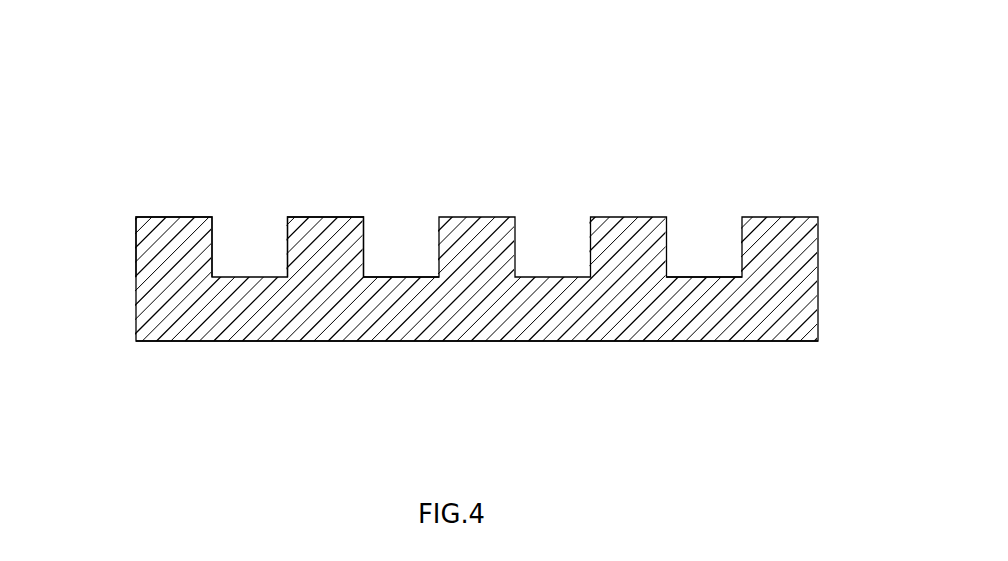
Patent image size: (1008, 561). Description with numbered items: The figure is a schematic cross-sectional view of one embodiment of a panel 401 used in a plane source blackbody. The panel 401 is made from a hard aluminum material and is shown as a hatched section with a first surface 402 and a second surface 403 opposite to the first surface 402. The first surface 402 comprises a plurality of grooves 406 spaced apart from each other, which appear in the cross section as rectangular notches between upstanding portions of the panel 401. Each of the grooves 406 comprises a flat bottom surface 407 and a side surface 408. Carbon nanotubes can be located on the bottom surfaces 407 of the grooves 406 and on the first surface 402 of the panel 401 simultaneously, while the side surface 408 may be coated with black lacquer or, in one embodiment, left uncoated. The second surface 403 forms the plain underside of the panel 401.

The panel 401 is at (468, 118).
The first surface 402 is at (173, 217).
The second surface 403 is at (180, 341).
The grooves 406 is at (703, 237).
The bottom surface 407 is at (396, 277).
The side surface 408 is at (365, 242).